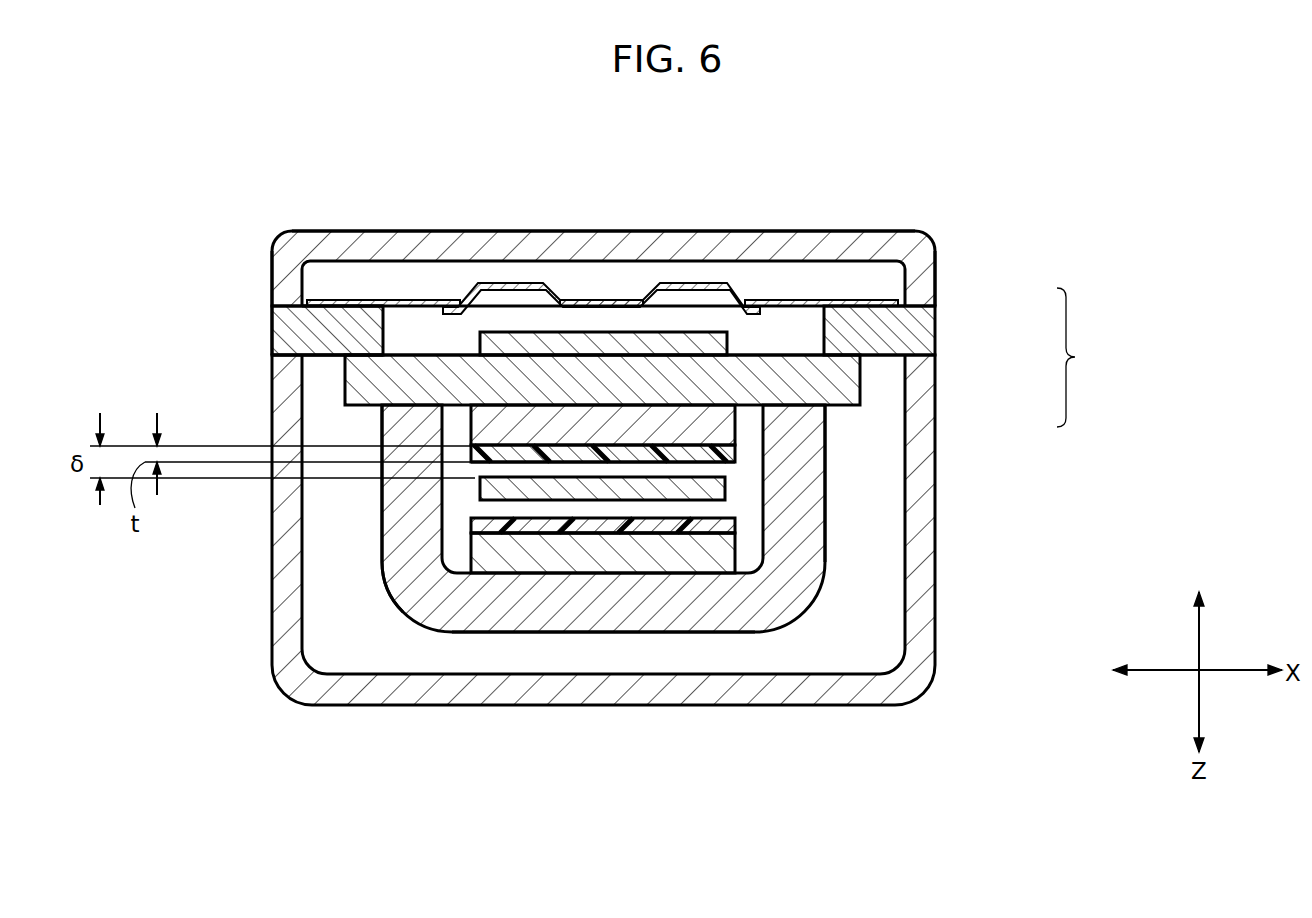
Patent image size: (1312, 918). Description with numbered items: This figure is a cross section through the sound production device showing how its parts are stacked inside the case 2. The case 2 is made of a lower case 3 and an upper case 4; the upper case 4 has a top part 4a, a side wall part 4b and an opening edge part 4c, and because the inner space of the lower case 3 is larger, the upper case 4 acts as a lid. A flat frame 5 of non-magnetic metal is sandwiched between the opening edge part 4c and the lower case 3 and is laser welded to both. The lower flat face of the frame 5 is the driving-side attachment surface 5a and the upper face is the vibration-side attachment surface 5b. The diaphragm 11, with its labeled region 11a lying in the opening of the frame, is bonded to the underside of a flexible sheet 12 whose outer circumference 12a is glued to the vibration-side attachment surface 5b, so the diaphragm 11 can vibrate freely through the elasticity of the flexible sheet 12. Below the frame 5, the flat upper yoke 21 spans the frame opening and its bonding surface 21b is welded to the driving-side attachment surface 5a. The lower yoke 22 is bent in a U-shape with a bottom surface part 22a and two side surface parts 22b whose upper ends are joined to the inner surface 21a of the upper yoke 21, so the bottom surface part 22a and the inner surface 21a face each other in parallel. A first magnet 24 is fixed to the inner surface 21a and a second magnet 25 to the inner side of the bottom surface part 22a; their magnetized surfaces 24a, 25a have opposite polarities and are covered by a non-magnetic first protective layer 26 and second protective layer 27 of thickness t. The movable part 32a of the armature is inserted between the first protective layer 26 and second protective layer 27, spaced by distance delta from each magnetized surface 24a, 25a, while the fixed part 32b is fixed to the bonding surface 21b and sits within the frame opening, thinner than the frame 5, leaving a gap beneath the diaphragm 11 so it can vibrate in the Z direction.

The case 2 is at (1077, 357).
The lower case 3 is at (936, 430).
The upper case 4 is at (936, 288).
The top part 4a is at (425, 232).
The side wall part 4b is at (272, 271).
The opening edge part 4c is at (272, 321).
The frame 5 is at (285, 334).
The driving-side attachment surface 5a is at (325, 356).
The vibration-side attachment surface 5b is at (372, 308).
The diaphragm 11 is at (607, 298).
The top of corrugated portion 11a is at (787, 300).
The flexible sheet 12 is at (700, 285).
The outer circumference 12a is at (317, 300).
The upper yoke 21 is at (420, 404).
The inner surface 21a is at (392, 594).
The bonding surface 21b is at (865, 325).
The lower yoke 22 is at (493, 632).
The bottom surface part 22a is at (667, 612).
The side surface parts 22b is at (383, 500).
The first magnet 24 is at (718, 431).
The magnetized surface 24a is at (718, 456).
The second magnet 25 is at (733, 556).
The magnetized surface 25a is at (740, 540).
The first protective layer 26 is at (712, 468).
The second protective layer 27 is at (728, 520).
The movable part 32a is at (560, 492).
The fixed part 32b is at (575, 342).